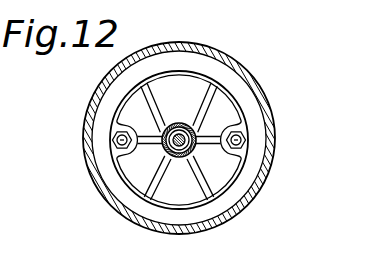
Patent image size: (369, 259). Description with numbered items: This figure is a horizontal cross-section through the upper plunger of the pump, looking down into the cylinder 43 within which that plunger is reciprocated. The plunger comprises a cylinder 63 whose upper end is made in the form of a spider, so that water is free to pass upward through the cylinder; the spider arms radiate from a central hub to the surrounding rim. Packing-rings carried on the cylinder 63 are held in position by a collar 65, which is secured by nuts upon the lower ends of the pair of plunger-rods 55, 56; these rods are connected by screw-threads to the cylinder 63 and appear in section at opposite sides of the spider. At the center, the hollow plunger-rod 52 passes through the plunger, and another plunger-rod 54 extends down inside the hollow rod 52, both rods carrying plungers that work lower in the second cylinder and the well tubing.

The cylinder 43 is at (236, 74).
The collar 65 is at (183, 70).
The cylinder 63 is at (176, 121).
The plunger-rod 55 is at (117, 139).
The plunger-rod 56 is at (246, 138).
The plunger-rod 54 is at (167, 149).
The hollow plunger-rod 52 is at (194, 152).